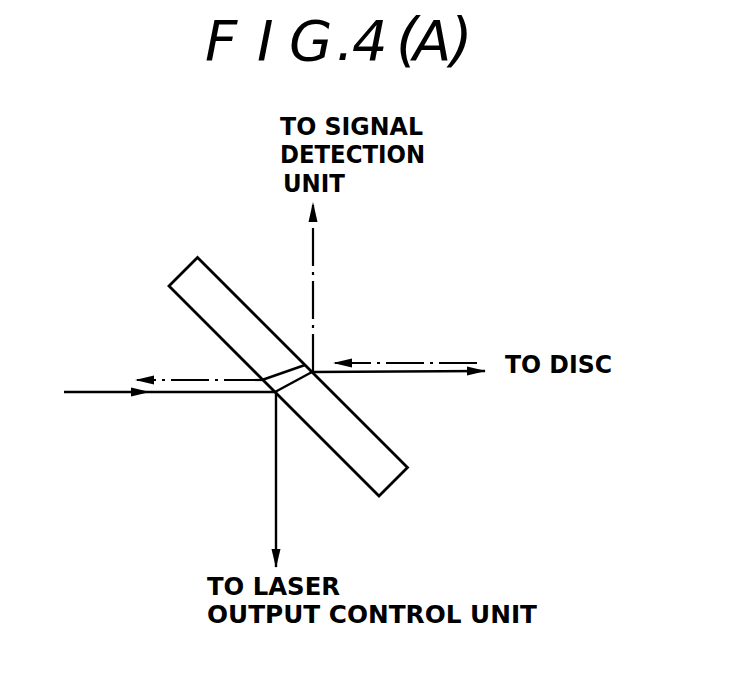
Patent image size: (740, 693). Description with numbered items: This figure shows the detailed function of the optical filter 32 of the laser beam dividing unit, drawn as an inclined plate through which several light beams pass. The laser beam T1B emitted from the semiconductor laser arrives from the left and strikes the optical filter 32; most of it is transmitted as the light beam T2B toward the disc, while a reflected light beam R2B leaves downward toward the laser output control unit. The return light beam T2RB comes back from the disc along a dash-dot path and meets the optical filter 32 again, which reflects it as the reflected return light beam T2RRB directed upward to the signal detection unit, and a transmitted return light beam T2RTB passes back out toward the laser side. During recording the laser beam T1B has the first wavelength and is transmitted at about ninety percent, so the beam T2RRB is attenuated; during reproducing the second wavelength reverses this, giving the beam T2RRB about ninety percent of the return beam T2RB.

The optical filter 32 is at (213, 272).
The laser beam T1B is at (169, 412).
The transmitted light beam T2B is at (408, 394).
The reflected light beam R2B is at (302, 480).
The reflected return light beam T2RRB is at (352, 287).
The return light beam T2RB is at (405, 349).
The transmitted return light beam T2RTB is at (197, 363).